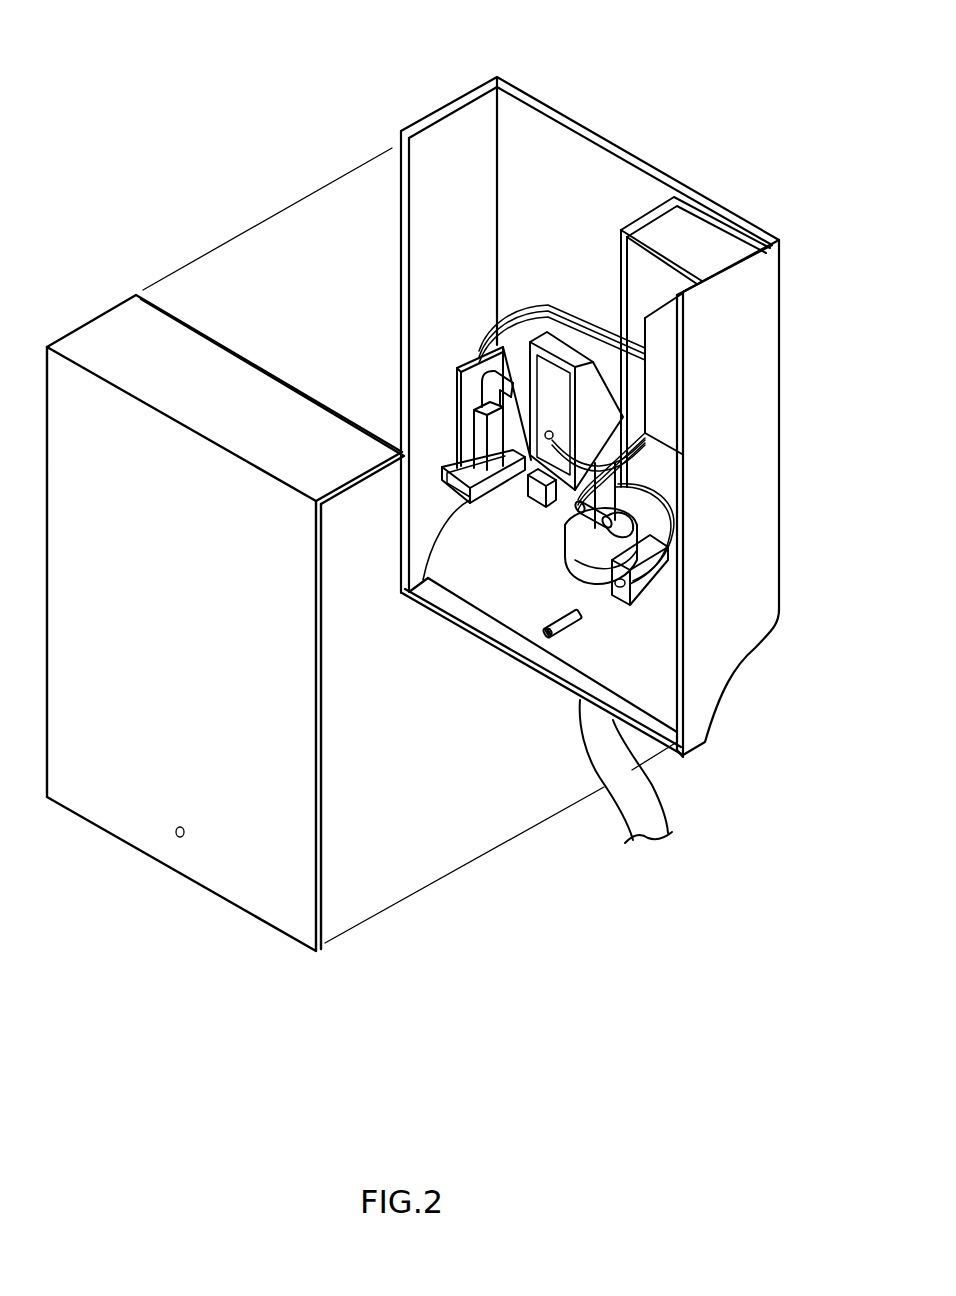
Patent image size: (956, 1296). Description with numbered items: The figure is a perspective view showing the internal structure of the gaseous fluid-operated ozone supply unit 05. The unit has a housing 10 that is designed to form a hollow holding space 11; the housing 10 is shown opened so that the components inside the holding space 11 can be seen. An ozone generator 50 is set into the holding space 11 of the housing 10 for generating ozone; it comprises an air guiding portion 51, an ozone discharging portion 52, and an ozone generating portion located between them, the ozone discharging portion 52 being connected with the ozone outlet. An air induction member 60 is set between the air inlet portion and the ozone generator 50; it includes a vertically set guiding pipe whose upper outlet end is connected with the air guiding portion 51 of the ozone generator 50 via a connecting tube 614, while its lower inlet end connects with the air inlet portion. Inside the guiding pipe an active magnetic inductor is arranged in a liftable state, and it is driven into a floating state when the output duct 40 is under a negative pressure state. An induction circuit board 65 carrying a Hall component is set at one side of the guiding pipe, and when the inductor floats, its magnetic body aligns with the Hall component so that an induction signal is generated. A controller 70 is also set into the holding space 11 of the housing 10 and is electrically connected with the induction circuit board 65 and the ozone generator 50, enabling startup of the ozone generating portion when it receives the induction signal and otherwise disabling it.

The gaseous fluid-operated ozone supply unit 05 is at (708, 98).
The housing 10 is at (112, 336).
The holding space 11 is at (546, 153).
The output duct 40 is at (645, 791).
The ozone generator 50 is at (563, 343).
The air guiding portion 51 is at (476, 393).
The ozone discharging portion 52 is at (614, 489).
The air induction member 60 is at (476, 418).
The induction circuit board 65 is at (463, 369).
The controller 70 is at (664, 379).
The connecting tube 614 is at (457, 370).